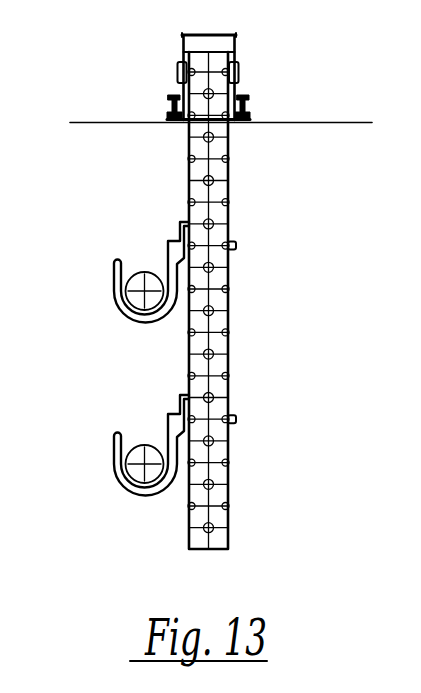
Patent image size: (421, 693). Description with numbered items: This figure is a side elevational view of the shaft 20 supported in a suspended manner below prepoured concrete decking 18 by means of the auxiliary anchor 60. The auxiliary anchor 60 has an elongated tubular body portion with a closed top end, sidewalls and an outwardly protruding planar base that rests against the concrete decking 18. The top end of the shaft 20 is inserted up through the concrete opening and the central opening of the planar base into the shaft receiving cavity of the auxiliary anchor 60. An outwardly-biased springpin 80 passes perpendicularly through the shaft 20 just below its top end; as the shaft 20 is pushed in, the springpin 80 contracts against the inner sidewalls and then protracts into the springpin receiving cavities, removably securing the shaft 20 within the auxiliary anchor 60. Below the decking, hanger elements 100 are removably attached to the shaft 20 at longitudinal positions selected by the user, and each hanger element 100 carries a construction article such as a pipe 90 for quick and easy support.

The prepoured concrete decking 18 is at (120, 123).
The shaft 20 is at (228, 355).
The auxiliary anchor 60 is at (185, 52).
The springpin 80 is at (243, 67).
The pipe 90 is at (145, 272).
The hanger element 100 is at (140, 323).